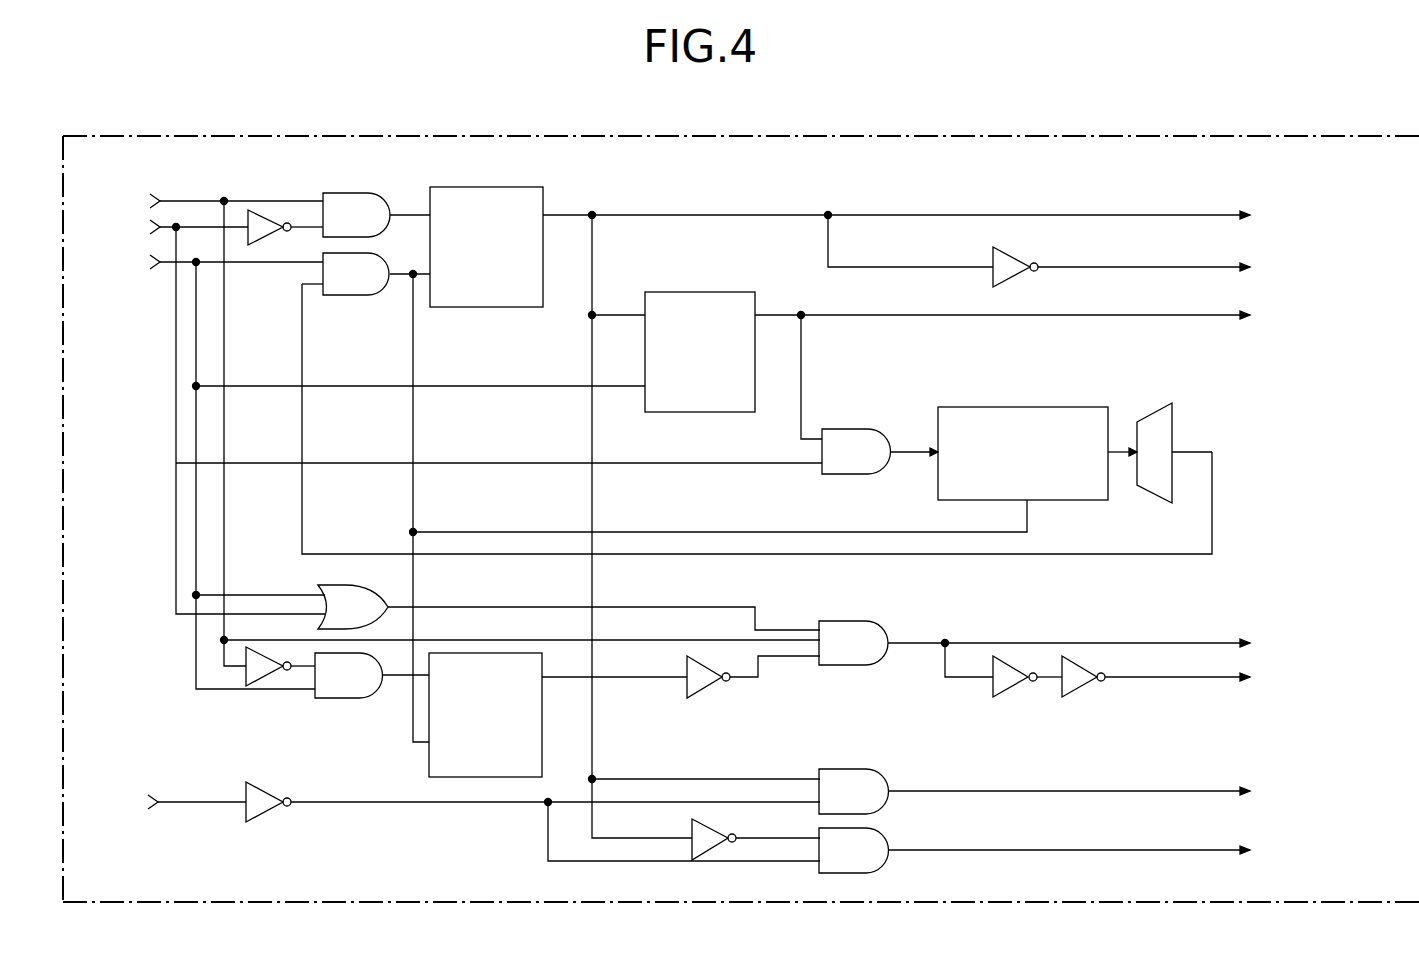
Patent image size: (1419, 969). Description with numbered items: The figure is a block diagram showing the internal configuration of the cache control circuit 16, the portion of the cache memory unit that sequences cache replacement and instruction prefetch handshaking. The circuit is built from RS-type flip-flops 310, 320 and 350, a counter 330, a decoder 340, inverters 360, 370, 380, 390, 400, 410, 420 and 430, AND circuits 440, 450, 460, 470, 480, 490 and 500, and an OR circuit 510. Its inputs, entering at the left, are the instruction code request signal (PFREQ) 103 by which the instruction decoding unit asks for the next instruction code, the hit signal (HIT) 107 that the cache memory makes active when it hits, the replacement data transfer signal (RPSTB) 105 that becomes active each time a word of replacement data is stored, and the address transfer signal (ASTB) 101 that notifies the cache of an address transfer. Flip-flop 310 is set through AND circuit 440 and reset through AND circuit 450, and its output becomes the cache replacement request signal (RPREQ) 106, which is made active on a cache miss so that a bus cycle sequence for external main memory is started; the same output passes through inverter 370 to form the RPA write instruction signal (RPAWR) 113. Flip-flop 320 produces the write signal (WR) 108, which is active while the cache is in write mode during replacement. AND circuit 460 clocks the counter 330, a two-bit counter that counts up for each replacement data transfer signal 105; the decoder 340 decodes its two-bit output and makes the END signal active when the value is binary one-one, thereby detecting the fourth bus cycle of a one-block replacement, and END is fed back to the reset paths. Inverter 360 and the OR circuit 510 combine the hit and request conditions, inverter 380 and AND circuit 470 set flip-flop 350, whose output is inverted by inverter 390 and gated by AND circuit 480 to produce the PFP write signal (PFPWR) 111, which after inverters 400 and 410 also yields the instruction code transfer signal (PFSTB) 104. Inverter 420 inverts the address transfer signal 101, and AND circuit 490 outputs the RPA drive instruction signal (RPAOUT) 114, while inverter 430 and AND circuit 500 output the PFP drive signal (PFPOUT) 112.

The cache control circuit 16 is at (467, 136).
The address transfer signal (ASTB) 101 is at (110, 766).
The instruction code request signal (PFREQ) 103 is at (176, 198).
The instruction code transfer signal (PFSTB) 104 is at (1203, 677).
The replacement data transfer signal (RPSTB) 105 is at (170, 265).
The cache replacement request signal (RPREQ) 106 is at (1198, 215).
The hit signal (HIT) 107 is at (168, 231).
The write signal (WR) 108 is at (1212, 315).
The PFP write signal (PFPWR) 111 is at (1203, 643).
The PFP drive signal (PFPOUT) 112 is at (1190, 850).
The RPA write instruction signal (RPAWR) 113 is at (1203, 267).
The RPA drive instruction signal (RPAOUT) 114 is at (1195, 791).
The RS-type flip-flop 310 is at (505, 307).
The RS-type flip-flop 320 is at (678, 292).
The counter 330 is at (1008, 407).
The decoder 340 is at (1155, 405).
The RS-type flip-flop 350 is at (429, 768).
The inverter 360 is at (267, 247).
The inverter 370 is at (1012, 252).
The inverter 380 is at (245, 676).
The inverter 390 is at (700, 690).
The inverter 400 is at (1008, 688).
The inverter 410 is at (1080, 688).
The inverter 420 is at (262, 815).
The inverter 430 is at (708, 823).
The AND circuit 440 is at (348, 193).
The AND circuit 450 is at (345, 295).
The AND circuit 460 is at (840, 429).
The AND circuit 470 is at (355, 698).
The AND circuit 480 is at (840, 621).
The AND circuit 490 is at (845, 769).
The AND circuit 500 is at (878, 830).
The OR circuit 510 is at (345, 585).